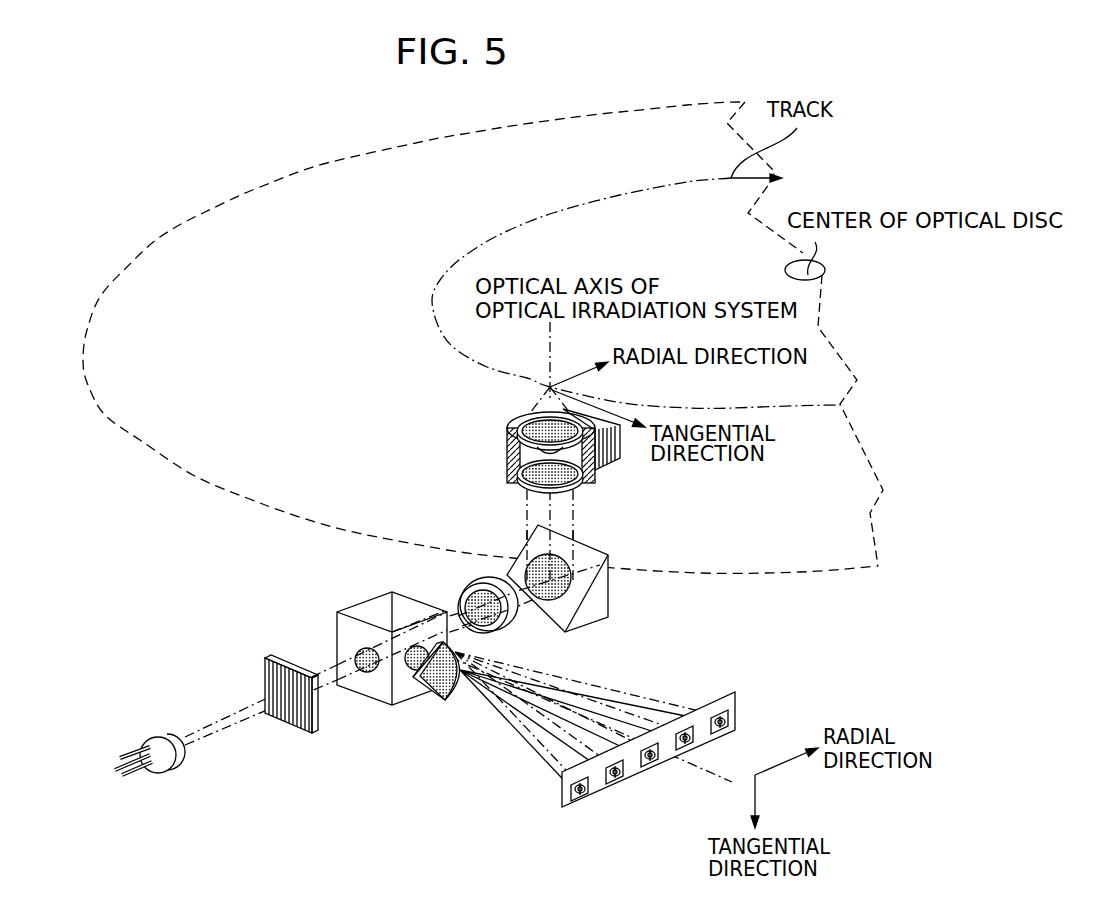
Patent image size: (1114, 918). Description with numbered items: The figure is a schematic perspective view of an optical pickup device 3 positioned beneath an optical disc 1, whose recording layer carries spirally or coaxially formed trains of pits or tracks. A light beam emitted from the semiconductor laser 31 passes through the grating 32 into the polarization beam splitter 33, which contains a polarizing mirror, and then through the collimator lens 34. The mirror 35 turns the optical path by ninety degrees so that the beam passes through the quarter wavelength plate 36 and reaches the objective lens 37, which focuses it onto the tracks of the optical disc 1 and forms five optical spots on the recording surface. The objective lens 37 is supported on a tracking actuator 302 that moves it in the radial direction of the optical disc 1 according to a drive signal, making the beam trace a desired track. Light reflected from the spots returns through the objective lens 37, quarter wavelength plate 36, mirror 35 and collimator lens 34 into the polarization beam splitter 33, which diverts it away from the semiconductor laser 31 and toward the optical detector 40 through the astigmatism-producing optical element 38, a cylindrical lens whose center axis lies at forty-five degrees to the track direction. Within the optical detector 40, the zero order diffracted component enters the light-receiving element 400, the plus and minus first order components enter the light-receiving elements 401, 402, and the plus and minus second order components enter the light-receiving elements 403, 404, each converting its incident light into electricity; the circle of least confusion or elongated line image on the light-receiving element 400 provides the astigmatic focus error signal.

The optical disc 1 is at (217, 242).
The optical pickup device 3 is at (233, 562).
The semiconductor laser 31 is at (156, 736).
The grating 32 is at (268, 658).
The polarization beam splitter 33 is at (350, 606).
The collimator lens 34 is at (466, 590).
The mirror 35 is at (612, 592).
The quarter wavelength plate 36 is at (520, 487).
The objective lens 37 is at (514, 420).
The tracking actuator 302 is at (508, 457).
The astigmatism-producing optical element 38 is at (447, 703).
The optical detector 40 is at (682, 746).
The light-receiving element 400 is at (648, 767).
The light-receiving element 401 is at (623, 784).
The light-receiving element 402 is at (693, 742).
The light-receiving element 403 is at (577, 802).
The light-receiving element 404 is at (730, 718).